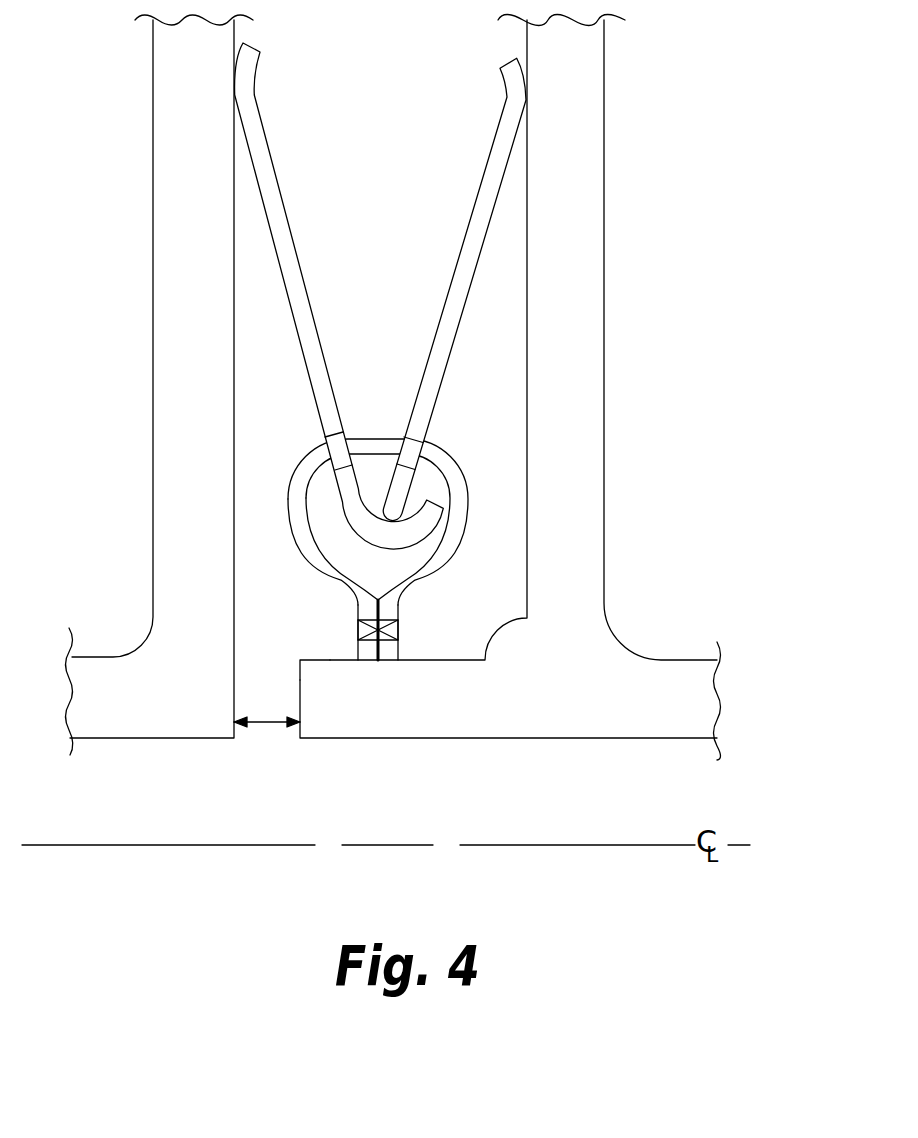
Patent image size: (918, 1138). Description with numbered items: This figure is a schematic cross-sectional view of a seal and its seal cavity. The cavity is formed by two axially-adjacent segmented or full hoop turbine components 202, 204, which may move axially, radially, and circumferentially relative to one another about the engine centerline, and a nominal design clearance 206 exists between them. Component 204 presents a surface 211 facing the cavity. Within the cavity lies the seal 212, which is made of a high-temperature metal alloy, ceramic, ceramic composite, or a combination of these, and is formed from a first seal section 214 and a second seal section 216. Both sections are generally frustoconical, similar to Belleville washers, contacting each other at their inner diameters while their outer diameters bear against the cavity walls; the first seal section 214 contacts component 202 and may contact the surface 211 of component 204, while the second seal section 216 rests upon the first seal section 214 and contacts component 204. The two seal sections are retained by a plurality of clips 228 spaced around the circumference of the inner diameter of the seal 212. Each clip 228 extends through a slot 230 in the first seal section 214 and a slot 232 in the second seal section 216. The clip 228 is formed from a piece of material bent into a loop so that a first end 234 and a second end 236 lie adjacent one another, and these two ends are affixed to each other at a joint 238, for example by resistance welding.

The turbine component 202 is at (143, 740).
The turbine component 204 is at (530, 740).
The nominal design clearance 206 is at (268, 725).
The surface 211 is at (316, 660).
The seal 212 is at (380, 296).
The first seal section 214 is at (310, 292).
The second seal section 216 is at (447, 293).
The clip 228 is at (467, 490).
The slot 230 is at (322, 448).
The slot 232 is at (427, 447).
The first end 234 is at (358, 646).
The second end 236 is at (398, 645).
The affixing location 238 is at (405, 625).